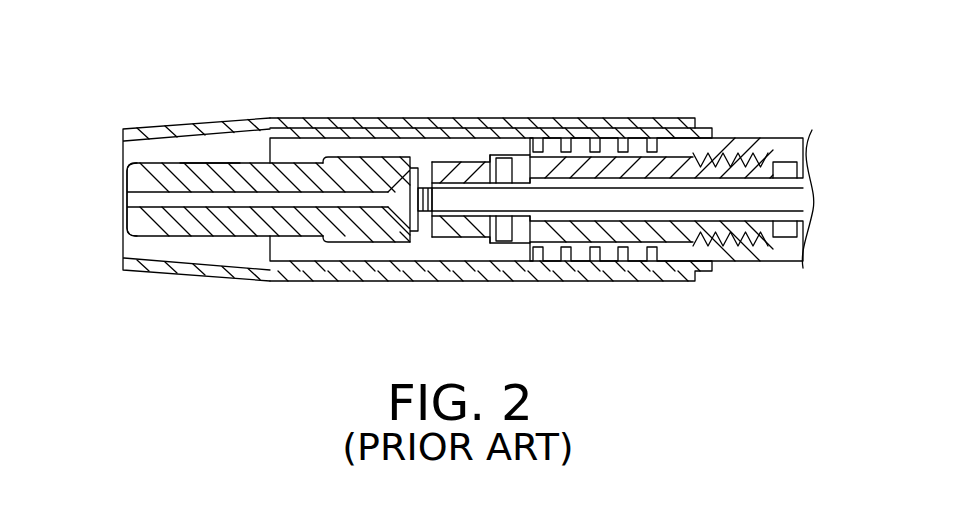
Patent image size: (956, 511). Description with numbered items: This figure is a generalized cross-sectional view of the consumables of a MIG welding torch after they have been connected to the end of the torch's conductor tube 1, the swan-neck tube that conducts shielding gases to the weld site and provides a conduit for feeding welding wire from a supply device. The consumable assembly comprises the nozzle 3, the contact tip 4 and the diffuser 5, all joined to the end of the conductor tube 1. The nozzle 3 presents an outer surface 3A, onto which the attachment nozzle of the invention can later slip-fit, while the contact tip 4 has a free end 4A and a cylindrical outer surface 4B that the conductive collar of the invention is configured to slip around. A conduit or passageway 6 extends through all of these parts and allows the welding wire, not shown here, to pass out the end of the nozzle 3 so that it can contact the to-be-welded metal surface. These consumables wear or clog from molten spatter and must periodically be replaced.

The conductor tube 1 is at (623, 232).
The nozzle 3 is at (465, 273).
The outer surface of the nozzle 3A is at (287, 118).
The contact tip 4 is at (221, 190).
The free end of the contact tip 4A is at (137, 222).
The cylindrical outer surface of the contact tip 4B is at (207, 163).
The diffuser 5 is at (506, 225).
The passageway 6 is at (323, 200).